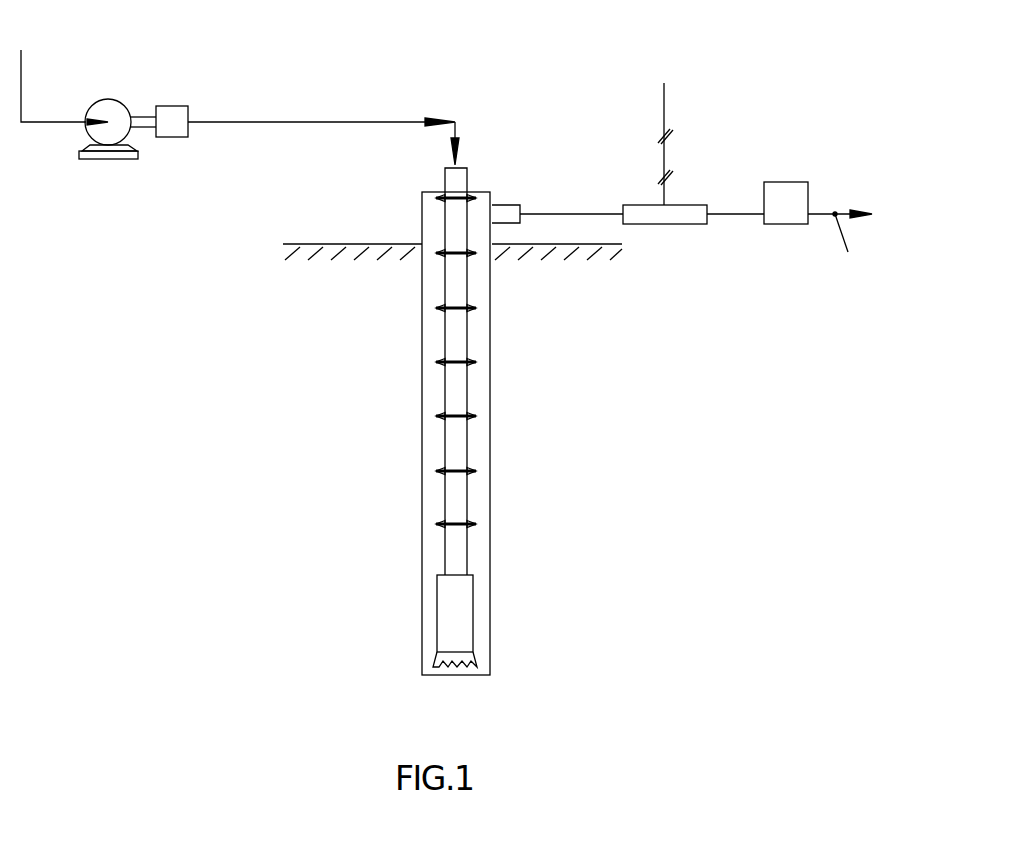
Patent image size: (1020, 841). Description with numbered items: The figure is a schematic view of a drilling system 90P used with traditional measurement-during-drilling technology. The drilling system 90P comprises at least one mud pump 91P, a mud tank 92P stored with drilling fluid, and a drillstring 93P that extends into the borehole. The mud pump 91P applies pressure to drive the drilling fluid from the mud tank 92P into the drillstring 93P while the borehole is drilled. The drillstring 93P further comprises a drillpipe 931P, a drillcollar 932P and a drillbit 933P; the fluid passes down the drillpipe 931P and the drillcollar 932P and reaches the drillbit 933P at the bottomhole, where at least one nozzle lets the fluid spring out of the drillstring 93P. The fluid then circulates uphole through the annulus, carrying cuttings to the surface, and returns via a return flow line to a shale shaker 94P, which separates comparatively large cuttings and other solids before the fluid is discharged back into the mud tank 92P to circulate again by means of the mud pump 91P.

The drilling system 90P is at (296, 58).
The mud pump 91P is at (107, 108).
The mud tank 92P is at (172, 128).
The drillstring 93P is at (445, 441).
The drillpipe 931P is at (458, 408).
The drillcollar 932P is at (458, 600).
The drillbit 933P is at (477, 657).
The shale shaker 94P is at (685, 209).